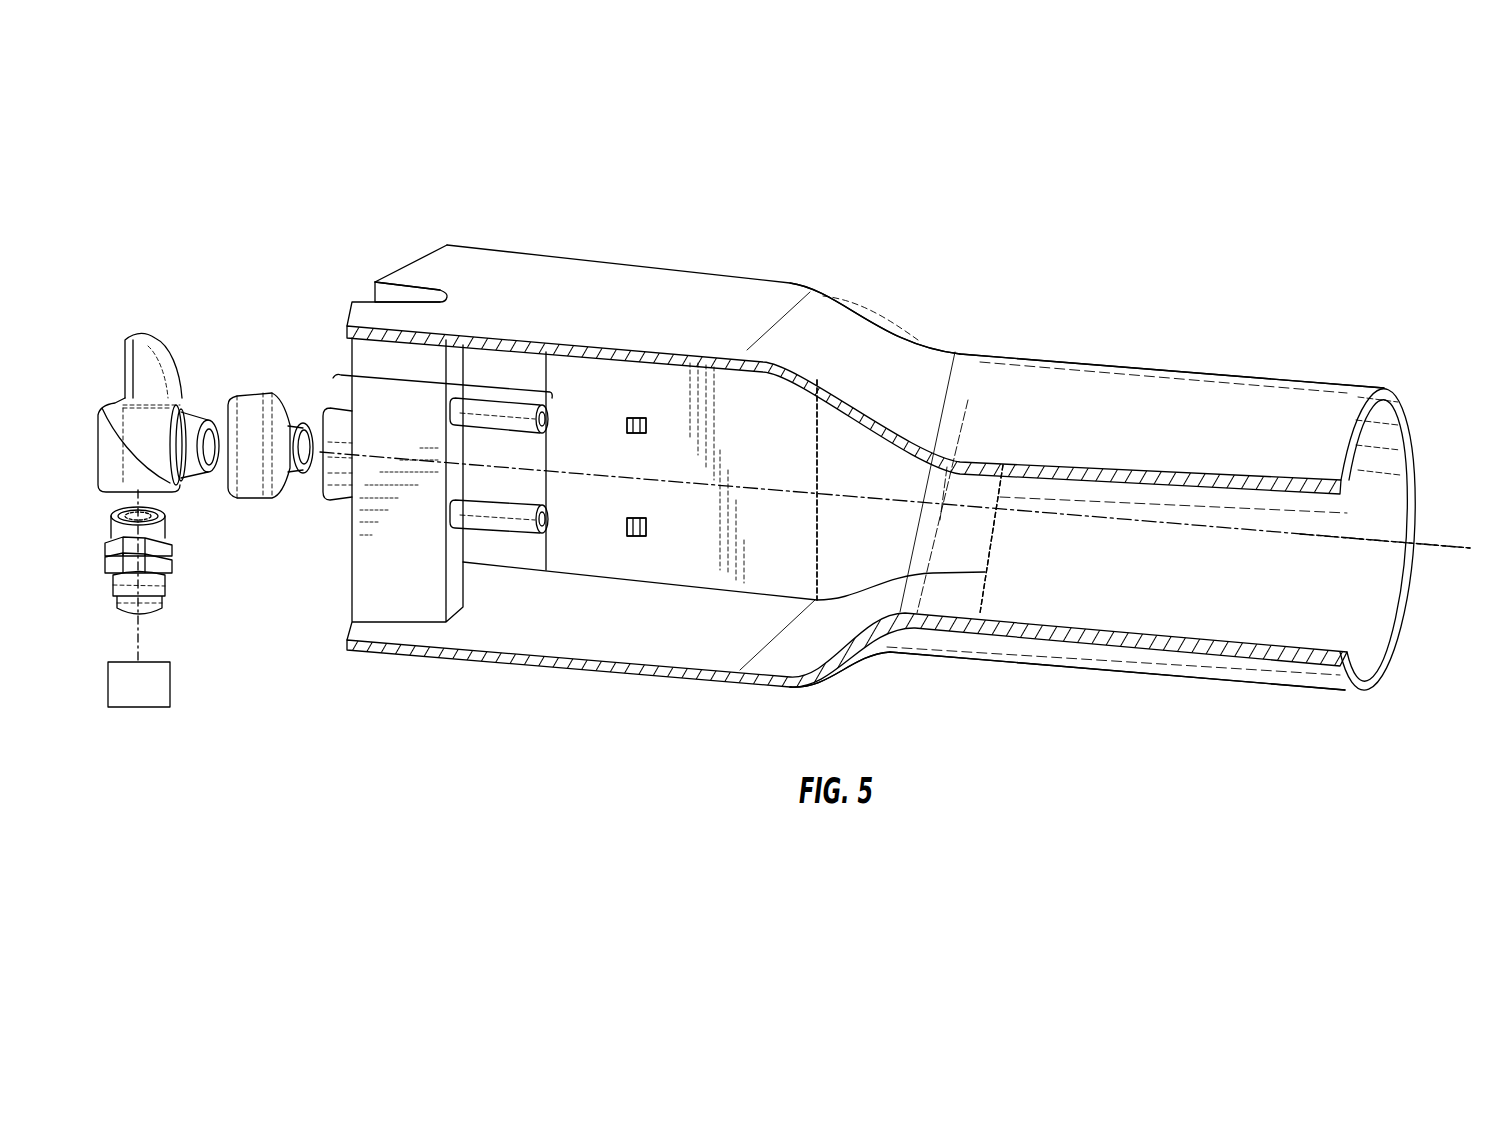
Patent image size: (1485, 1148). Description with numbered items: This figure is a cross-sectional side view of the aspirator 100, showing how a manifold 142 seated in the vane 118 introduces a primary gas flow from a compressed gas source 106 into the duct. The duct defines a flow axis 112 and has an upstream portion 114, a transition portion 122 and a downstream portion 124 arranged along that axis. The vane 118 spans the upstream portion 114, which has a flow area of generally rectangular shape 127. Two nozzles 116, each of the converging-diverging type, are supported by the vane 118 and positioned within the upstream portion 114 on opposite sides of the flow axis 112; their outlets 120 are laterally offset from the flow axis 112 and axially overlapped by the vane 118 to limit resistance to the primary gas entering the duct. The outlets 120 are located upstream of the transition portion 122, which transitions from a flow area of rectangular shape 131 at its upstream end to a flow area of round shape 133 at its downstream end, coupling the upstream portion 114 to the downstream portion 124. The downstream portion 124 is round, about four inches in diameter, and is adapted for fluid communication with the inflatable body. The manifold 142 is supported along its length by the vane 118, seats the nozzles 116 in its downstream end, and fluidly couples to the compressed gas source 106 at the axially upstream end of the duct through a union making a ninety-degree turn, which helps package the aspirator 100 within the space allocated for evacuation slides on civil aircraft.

The aspirator 100 is at (300, 711).
The compressed gas source 106 is at (139, 684).
The flow axis 112 is at (1448, 548).
The upstream portion 114 is at (500, 283).
The nozzles 116 is at (625, 528).
The vane 118 is at (372, 577).
The outlets 120 is at (657, 528).
The transition portion 122 is at (888, 372).
The downstream portion 124 is at (1165, 420).
The rectangular shape 127 is at (547, 438).
The rectangular shape 131 is at (820, 478).
The round shape 133 is at (1002, 505).
The manifold 142 is at (439, 383).